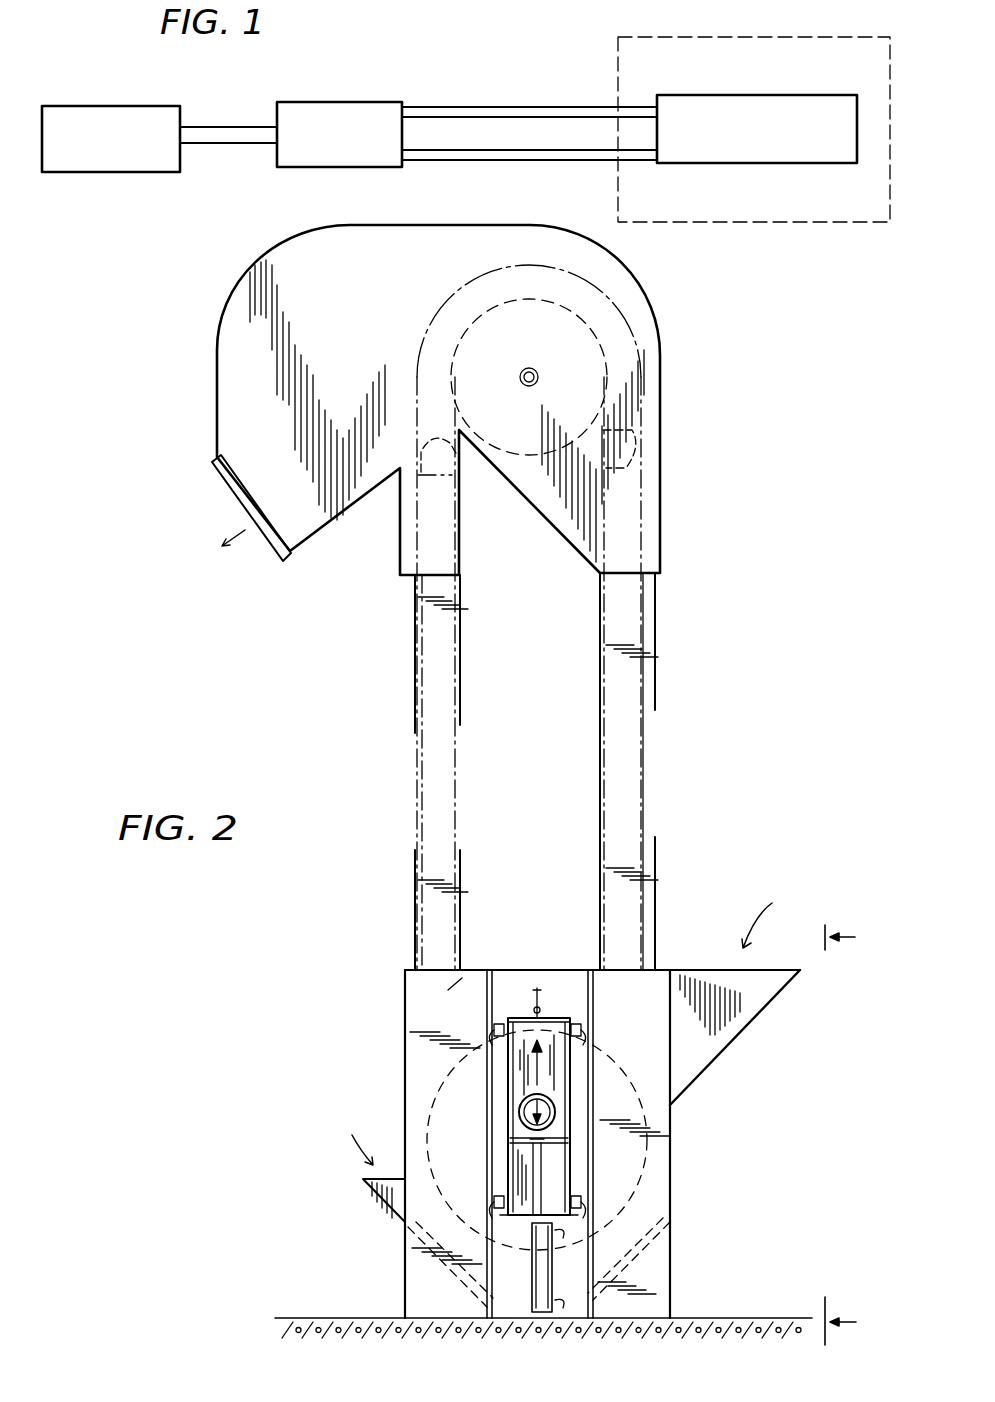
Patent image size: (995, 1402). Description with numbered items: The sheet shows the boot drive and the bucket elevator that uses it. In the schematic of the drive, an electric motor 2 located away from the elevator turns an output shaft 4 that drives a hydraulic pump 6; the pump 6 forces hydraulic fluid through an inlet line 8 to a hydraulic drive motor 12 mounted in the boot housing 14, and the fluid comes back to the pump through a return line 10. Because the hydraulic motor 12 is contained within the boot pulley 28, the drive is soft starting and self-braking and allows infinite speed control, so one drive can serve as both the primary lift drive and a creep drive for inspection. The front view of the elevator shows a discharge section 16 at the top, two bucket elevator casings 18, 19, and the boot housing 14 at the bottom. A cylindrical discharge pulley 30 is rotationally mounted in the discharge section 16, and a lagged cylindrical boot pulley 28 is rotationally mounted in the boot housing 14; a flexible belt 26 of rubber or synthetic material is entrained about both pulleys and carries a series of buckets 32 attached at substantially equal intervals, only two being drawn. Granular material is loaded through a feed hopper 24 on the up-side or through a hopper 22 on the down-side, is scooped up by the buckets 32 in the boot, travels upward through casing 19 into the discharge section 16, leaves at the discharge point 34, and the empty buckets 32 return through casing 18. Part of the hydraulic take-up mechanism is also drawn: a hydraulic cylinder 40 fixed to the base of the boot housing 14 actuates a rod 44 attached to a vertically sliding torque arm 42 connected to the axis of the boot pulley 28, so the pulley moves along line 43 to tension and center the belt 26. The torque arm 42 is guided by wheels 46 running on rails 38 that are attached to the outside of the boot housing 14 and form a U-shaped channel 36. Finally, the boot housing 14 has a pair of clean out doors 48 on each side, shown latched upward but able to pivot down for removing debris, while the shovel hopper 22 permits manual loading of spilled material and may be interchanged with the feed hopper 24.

In FIG. 1, the electric motor 2 is at (58, 118).
In FIG. 1, the output shaft 4 is at (229, 131).
In FIG. 1, the hydraulic pump 6 is at (352, 112).
In FIG. 2, the hydraulic pump 6 is at (861, 1134).
In FIG. 1, the inlet line 8 is at (485, 107).
In FIG. 1, the return line 10 is at (497, 166).
In FIG. 1, the hydraulic drive motor 12 is at (768, 97).
In FIG. 1, the boot housing 14 is at (686, 39).
In FIG. 2, the boot housing 14 is at (406, 1040).
In FIG. 2, the discharge section 16 is at (662, 528).
In FIG. 2, the bucket elevator casing 18 is at (416, 725).
In FIG. 2, the bucket elevator casing 19 is at (657, 698).
In FIG. 2, the feed hopper (shovel hopper) 22 is at (386, 1205).
In FIG. 2, the feed hopper 24 is at (745, 1022).
In FIG. 2, the flexible belt 26 is at (466, 981).
In FIG. 2, the boot pulley 28 is at (460, 1093).
In FIG. 2, the discharge pulley 30 is at (483, 345).
In FIG. 2, the buckets 32 is at (428, 440).
In FIG. 2, the discharge point 34 is at (232, 484).
In FIG. 2, the U-shaped channel 36 is at (550, 976).
In FIG. 2, the rails 38 is at (493, 1263).
In FIG. 2, the hydraulic cylinder 40 is at (548, 1276).
In FIG. 2, the torque arm 42 is at (572, 1104).
In FIG. 2, the line of vertical movement 43 is at (546, 1078).
In FIG. 2, the rod 44 is at (546, 1165).
In FIG. 2, the wheels 46 is at (580, 1022).
In FIG. 2, the clean out doors 48 is at (450, 1291).